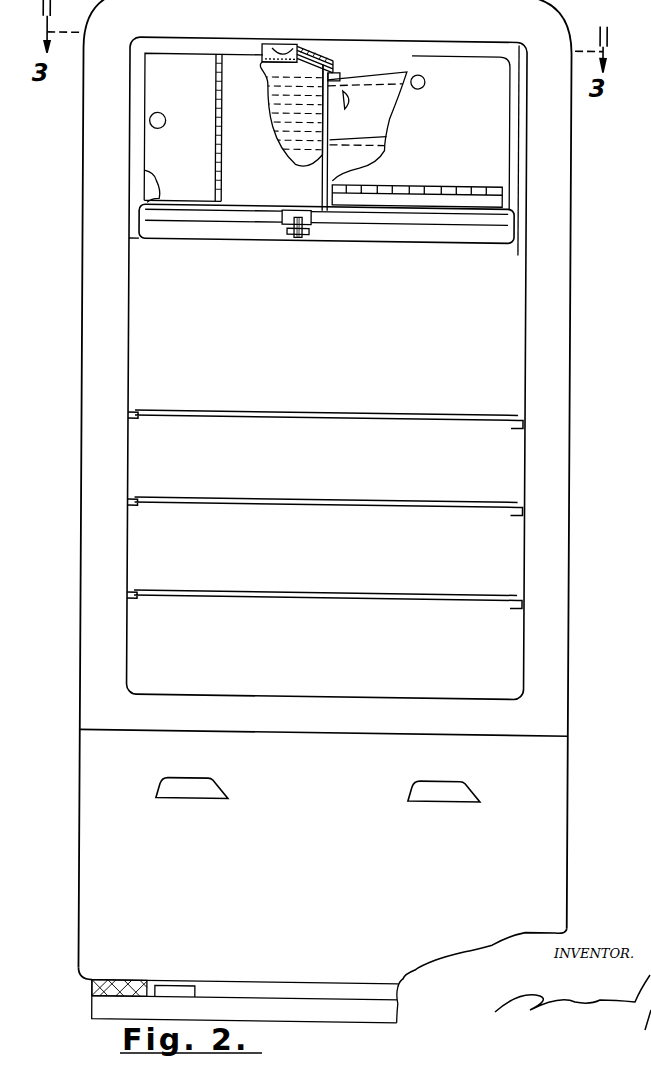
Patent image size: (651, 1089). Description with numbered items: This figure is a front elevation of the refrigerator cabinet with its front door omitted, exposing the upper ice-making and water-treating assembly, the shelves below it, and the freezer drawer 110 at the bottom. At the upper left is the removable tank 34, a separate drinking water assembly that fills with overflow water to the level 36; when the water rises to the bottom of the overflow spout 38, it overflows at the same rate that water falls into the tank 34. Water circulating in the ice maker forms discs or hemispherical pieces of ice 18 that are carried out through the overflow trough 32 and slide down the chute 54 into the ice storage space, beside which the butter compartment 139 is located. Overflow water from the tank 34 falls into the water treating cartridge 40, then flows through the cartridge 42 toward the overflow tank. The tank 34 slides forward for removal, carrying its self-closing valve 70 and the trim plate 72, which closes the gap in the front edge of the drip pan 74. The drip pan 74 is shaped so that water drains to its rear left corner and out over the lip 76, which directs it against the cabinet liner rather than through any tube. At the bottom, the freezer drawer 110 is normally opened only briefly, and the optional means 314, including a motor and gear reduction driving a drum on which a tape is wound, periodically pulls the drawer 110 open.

The pieces of ice 18 is at (275, 46).
The overflow trough 32 is at (300, 46).
The chute 54 is at (325, 53).
The water level 36 is at (263, 64).
The overflow spout 38 is at (339, 76).
The water treating cartridge 40 is at (368, 78).
The cartridge 42 is at (348, 146).
The removable tank 34 is at (203, 127).
The butter compartment 139 is at (150, 192).
The trim plate 72 is at (295, 210).
The self-closing valve 70 is at (310, 227).
The drip pan 74 is at (417, 215).
The lip 76 is at (135, 239).
The drawer 110 is at (323, 801).
The drawer opening means 314 is at (183, 984).